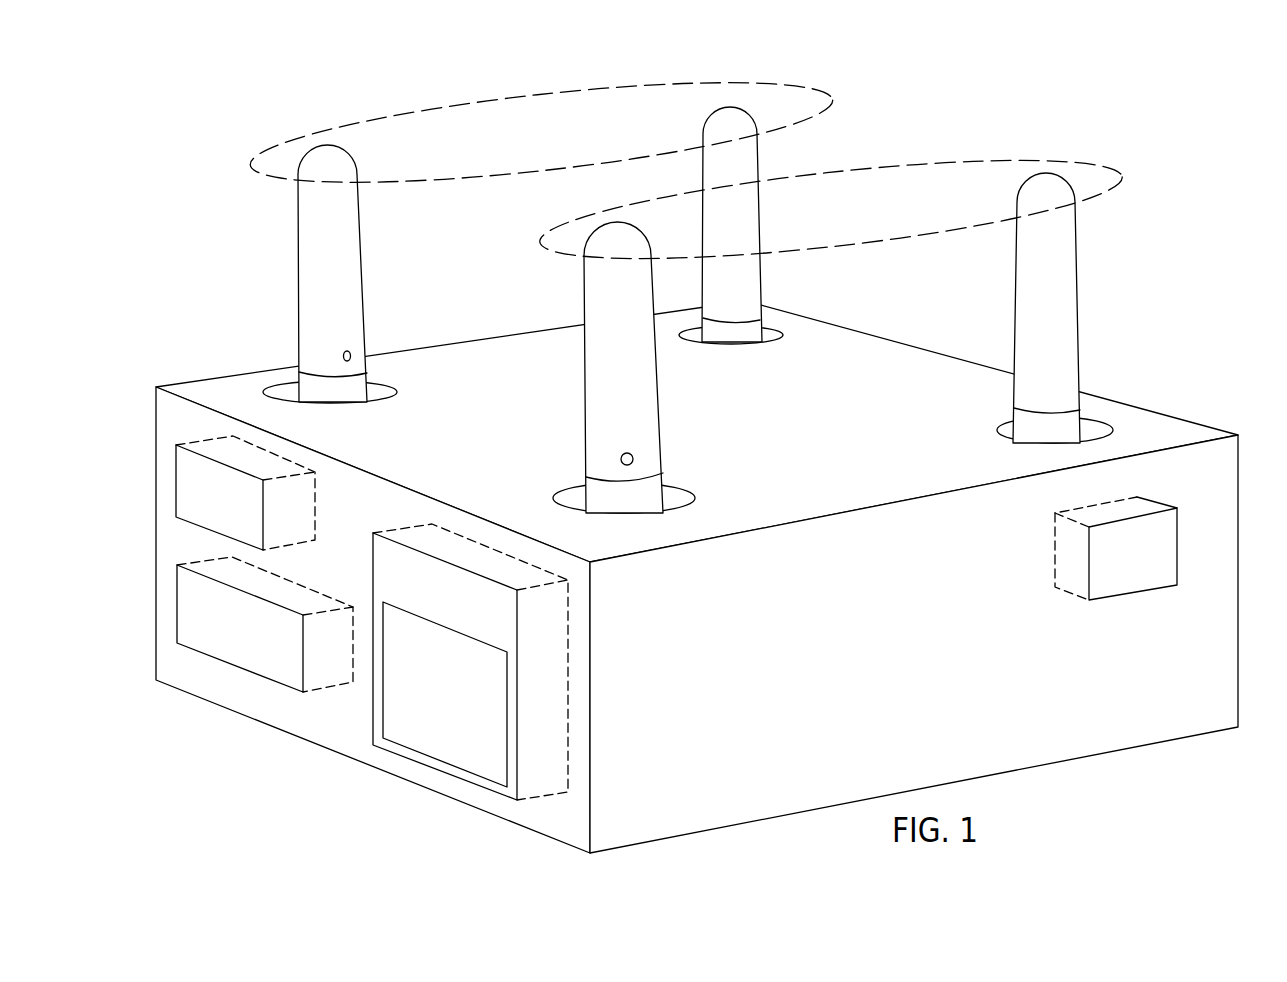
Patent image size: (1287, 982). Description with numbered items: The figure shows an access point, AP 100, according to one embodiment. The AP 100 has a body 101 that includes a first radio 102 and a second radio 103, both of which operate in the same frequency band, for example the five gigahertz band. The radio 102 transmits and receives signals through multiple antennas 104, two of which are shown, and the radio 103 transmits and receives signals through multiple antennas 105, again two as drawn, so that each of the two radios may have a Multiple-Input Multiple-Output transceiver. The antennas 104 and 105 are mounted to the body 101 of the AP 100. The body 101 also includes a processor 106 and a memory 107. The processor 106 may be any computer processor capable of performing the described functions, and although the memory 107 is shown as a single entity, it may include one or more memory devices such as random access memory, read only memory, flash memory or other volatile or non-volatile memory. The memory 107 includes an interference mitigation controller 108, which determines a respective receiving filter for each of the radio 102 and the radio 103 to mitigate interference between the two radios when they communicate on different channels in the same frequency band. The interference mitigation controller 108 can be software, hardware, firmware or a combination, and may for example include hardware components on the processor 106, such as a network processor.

The AP 100 is at (707, 451).
The body 101 is at (707, 480).
The first radio 102 is at (245, 493).
The second radio 103 is at (1116, 548).
The antennas 104 is at (483, 98).
The antennas 105 is at (910, 158).
The processor 106 is at (265, 624).
The memory 107 is at (470, 662).
The interference mitigation controller 108 is at (445, 694).